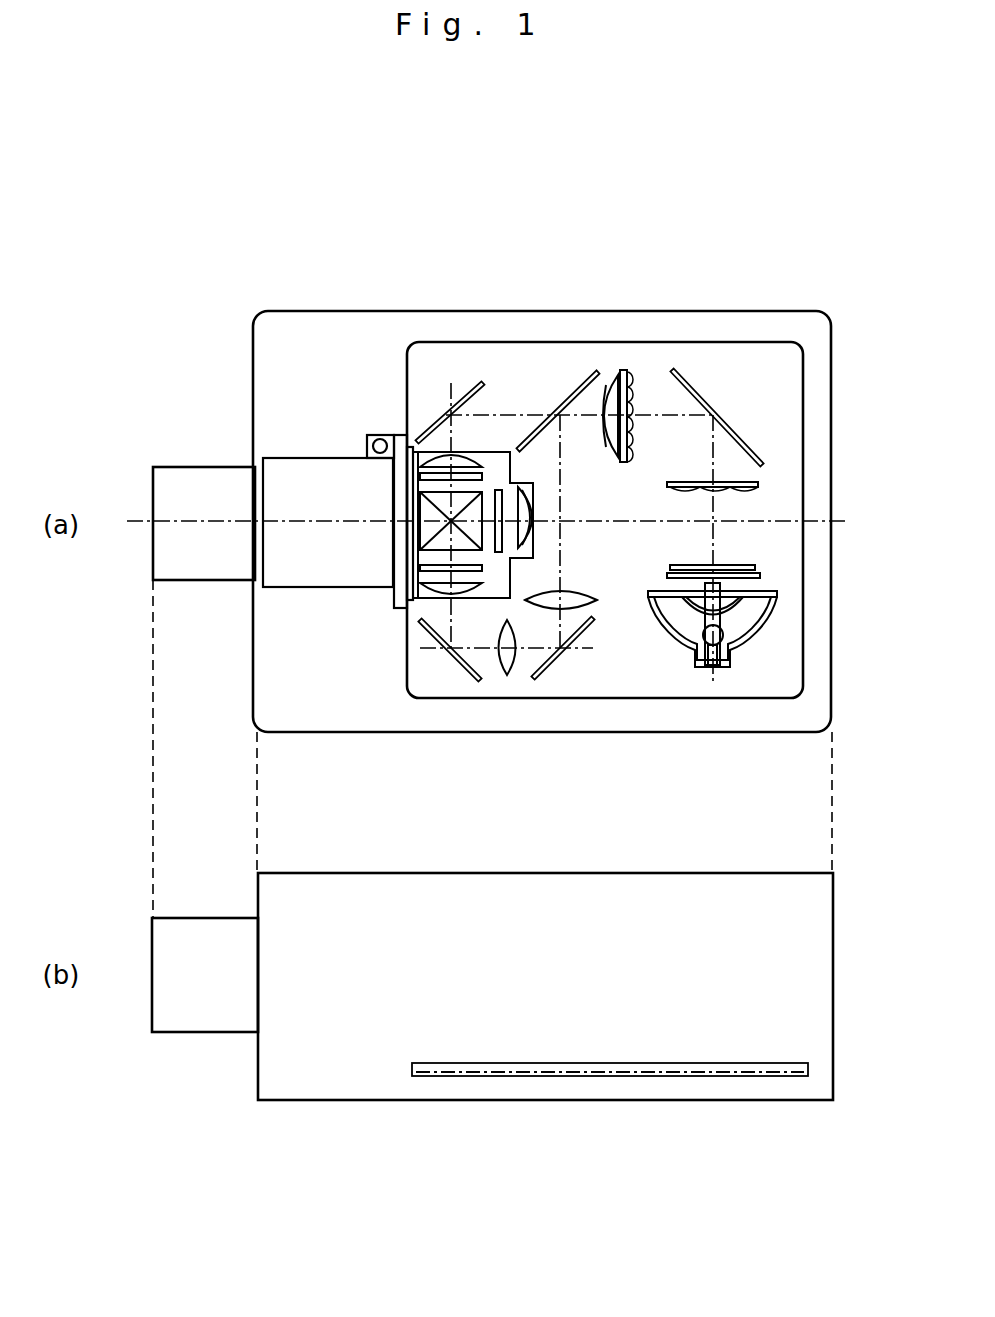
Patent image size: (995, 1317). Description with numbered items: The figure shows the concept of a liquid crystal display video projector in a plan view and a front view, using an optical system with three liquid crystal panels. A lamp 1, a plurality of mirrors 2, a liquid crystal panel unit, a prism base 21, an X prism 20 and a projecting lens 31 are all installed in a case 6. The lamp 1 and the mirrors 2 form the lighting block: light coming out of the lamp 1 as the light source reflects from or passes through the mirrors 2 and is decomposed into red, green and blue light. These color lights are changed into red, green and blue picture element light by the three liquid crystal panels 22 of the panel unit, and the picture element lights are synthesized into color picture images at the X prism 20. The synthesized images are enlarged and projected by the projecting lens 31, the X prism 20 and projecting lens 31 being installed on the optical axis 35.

The lamp 1 is at (737, 622).
The mirrors 2 is at (672, 370).
The case 6 is at (335, 1083).
The X prism 20 is at (425, 512).
The prism base 21 is at (483, 593).
The liquid crystal panels 22 is at (432, 447).
The projecting lens 31 is at (290, 573).
The optical axis 35 is at (780, 520).